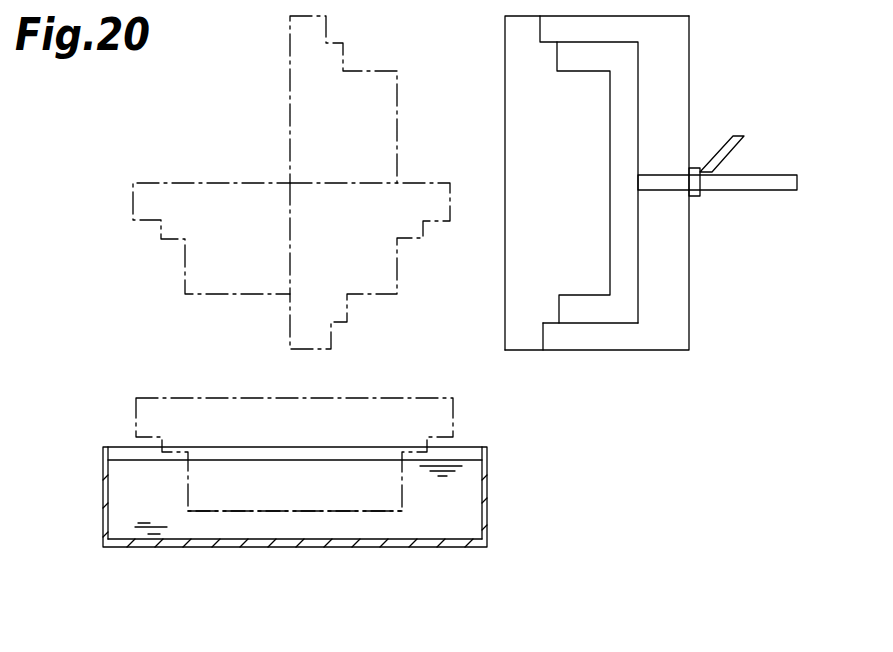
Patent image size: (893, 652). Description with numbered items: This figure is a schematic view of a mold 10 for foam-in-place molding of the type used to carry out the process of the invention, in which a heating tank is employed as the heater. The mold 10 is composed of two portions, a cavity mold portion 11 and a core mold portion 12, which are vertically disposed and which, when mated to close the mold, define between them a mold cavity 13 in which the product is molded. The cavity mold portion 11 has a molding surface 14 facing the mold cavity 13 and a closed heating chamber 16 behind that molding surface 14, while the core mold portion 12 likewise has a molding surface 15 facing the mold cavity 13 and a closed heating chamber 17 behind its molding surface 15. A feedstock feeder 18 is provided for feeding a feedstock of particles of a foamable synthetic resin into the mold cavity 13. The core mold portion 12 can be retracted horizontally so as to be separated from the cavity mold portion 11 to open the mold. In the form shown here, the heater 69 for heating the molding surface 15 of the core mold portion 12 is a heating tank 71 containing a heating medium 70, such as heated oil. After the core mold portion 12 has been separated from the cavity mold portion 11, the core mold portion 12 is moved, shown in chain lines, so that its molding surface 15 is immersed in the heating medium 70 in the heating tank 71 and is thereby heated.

The mold 10 is at (496, 52).
The cavity mold portion 11 is at (692, 310).
The core mold portion 12 is at (305, 150).
The mold cavity 13 is at (611, 245).
The molding surface 14 is at (637, 130).
The molding surface 15 is at (609, 95).
The heating chamber 16 is at (660, 327).
The heating chamber 17 is at (527, 325).
The feedstock feeder 18 is at (772, 187).
The heater 69 is at (498, 510).
The heating medium 70 is at (471, 473).
The heating tank 71 is at (487, 465).